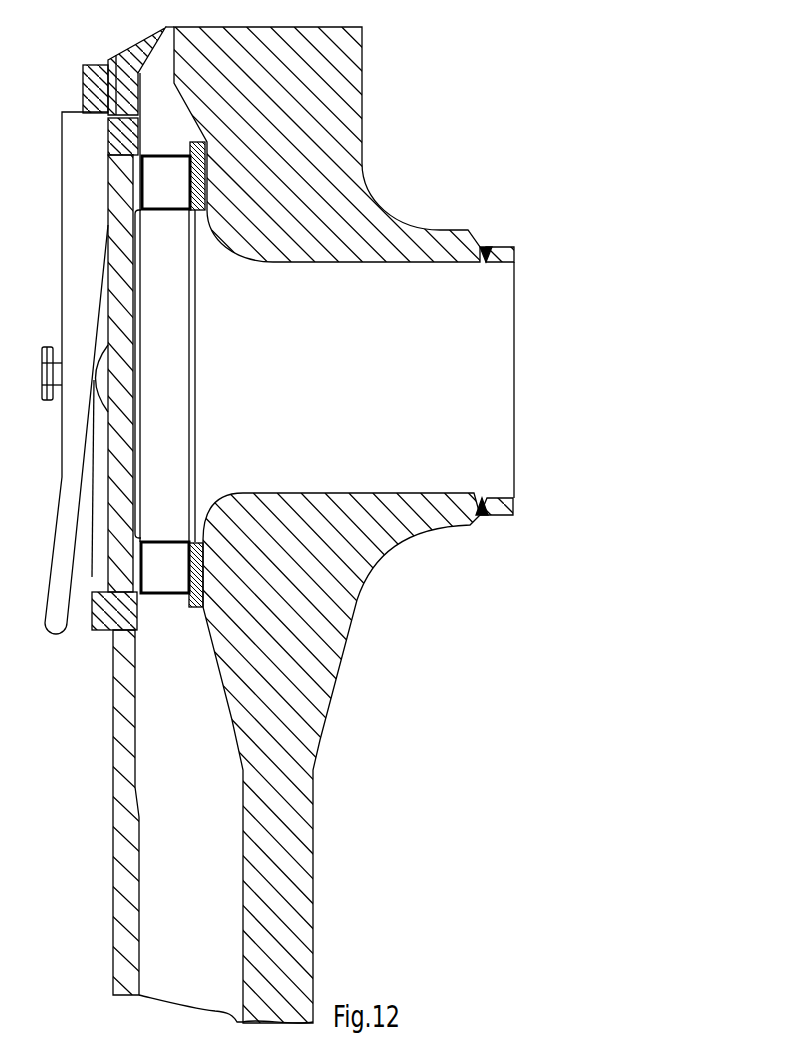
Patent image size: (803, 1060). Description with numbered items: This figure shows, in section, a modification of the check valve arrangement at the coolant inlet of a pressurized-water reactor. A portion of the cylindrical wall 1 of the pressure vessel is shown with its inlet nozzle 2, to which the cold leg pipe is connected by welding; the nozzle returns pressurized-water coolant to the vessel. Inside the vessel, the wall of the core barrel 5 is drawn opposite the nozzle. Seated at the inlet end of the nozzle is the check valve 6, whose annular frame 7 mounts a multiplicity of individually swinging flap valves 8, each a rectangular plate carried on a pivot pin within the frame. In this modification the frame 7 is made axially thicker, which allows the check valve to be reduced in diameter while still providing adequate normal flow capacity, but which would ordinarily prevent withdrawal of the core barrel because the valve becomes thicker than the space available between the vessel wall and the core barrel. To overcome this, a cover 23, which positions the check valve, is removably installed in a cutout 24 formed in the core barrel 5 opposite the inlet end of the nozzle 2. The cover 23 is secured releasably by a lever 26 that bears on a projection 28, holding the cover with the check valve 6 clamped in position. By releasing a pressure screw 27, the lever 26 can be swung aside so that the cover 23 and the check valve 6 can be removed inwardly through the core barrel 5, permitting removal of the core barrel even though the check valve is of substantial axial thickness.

The cylindrical wall 1 is at (300, 848).
The inlet nozzle 2 is at (460, 232).
The tube 5 is at (133, 825).
The check valve 6 is at (173, 320).
The annular frame 7 is at (141, 198).
The flap valves 8 is at (159, 170).
The cover 23 is at (108, 265).
The cutout 24 is at (102, 578).
The lever 26 is at (68, 481).
The pressure screw 27 is at (42, 382).
The projection 28 is at (104, 365).